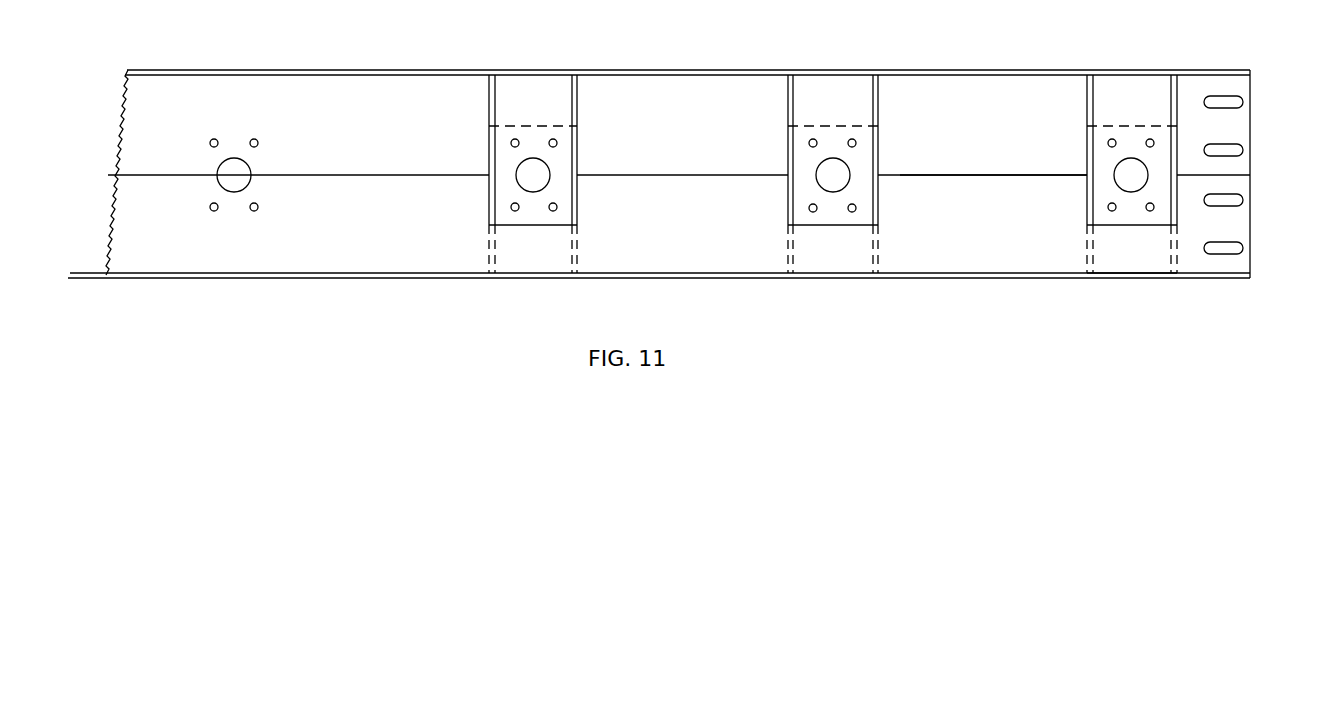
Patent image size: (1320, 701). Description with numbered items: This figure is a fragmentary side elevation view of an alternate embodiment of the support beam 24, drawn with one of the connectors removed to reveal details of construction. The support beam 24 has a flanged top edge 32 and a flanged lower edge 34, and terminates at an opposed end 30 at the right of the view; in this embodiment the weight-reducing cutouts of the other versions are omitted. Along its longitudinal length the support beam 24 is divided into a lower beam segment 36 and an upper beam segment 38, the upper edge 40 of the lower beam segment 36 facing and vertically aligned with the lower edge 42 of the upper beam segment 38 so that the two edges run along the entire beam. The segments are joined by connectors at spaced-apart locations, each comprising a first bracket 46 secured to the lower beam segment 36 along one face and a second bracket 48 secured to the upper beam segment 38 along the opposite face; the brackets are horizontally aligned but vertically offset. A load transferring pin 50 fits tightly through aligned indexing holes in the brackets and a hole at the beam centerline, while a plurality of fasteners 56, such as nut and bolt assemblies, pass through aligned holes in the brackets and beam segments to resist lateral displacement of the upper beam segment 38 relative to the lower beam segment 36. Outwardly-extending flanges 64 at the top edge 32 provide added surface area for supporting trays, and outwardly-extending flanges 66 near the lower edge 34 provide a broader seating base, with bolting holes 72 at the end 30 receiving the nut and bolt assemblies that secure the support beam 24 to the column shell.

The support beam 24 is at (721, 66).
The opposed end 30 is at (1243, 135).
The flanged top edge 32 is at (1252, 80).
The flanged lower edge 34 is at (1252, 268).
The lower beam segment 36 is at (1020, 250).
The upper beam segment 38 is at (953, 100).
The upper edge 40 is at (945, 173).
The lower edge 42 is at (1017, 175).
The first bracket 46 is at (880, 249).
The second bracket 48 is at (847, 204).
The load transferring pin 50 is at (822, 180).
The fasteners 56 is at (816, 139).
The outwardly-extending flange 64 is at (1076, 70).
The outwardly-extending flange 66 is at (1155, 277).
The bolting holes 72 is at (1233, 105).